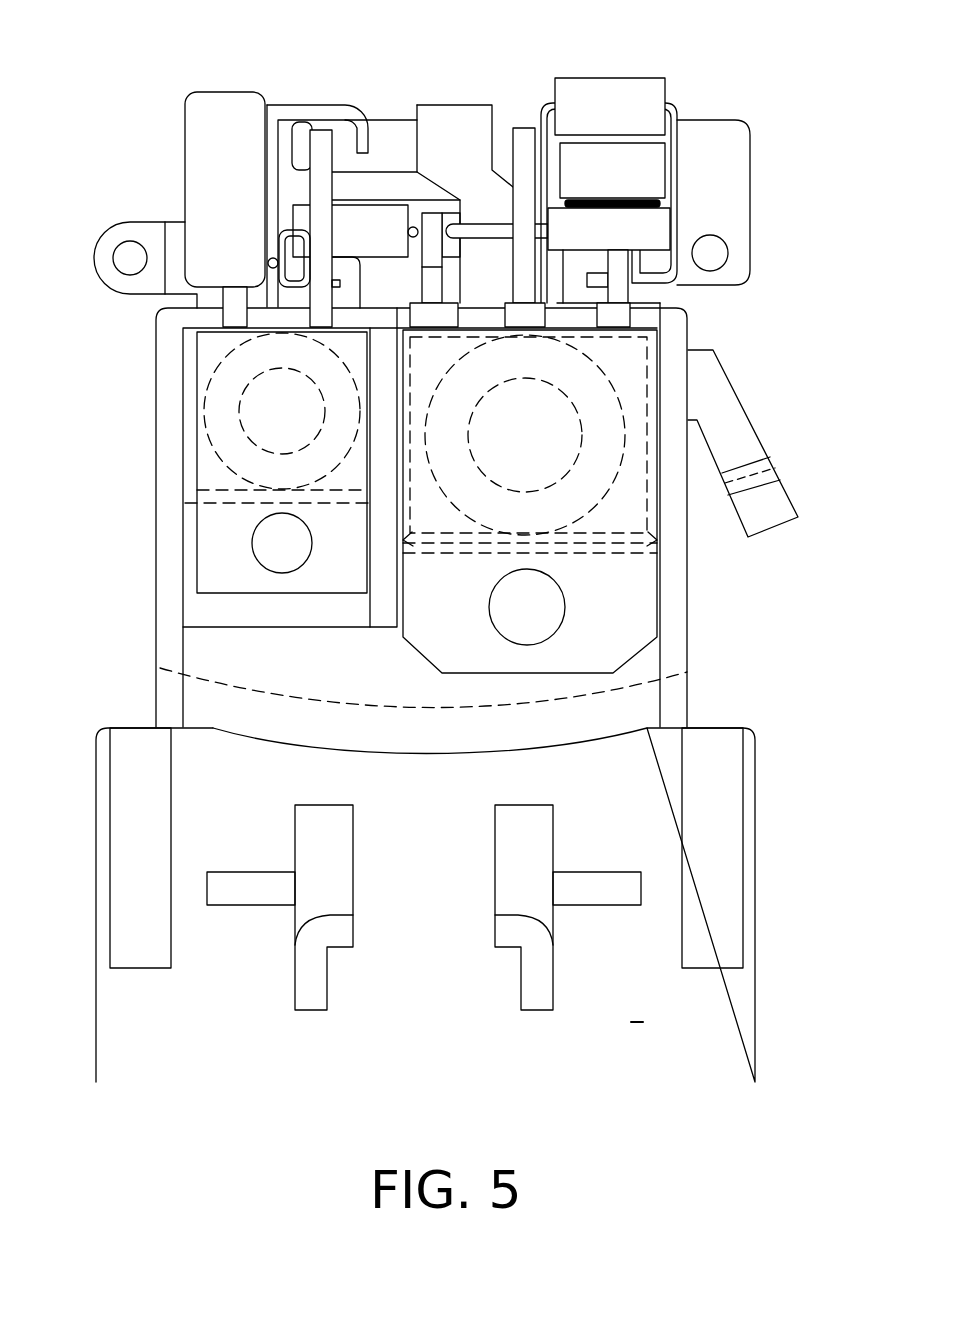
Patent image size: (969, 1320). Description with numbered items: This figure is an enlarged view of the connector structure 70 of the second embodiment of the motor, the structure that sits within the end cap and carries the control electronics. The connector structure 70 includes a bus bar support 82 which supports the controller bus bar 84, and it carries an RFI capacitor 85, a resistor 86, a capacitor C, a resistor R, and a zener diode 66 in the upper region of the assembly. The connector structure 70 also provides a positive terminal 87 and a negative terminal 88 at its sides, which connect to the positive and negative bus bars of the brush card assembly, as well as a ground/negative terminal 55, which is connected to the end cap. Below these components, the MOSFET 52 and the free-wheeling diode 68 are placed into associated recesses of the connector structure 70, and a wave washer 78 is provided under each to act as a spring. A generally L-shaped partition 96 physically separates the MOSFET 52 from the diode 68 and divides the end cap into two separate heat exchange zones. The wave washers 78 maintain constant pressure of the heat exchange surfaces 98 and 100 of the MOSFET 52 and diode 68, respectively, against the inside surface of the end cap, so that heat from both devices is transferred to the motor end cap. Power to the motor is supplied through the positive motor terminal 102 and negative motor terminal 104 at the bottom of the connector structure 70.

The MOSFET 52 is at (633, 612).
The ground/negative terminal 55 is at (772, 512).
The zener diode 66 is at (627, 165).
The free-wheeling diode 68 is at (213, 558).
The connector structure 70 is at (210, 795).
The wave washer 78 is at (218, 413).
The bus bar support 82 is at (468, 135).
The controller bus bar 84 is at (343, 137).
The RFI capacitor 85 is at (202, 140).
The resistor 86 is at (380, 223).
The positive terminal 87 is at (140, 287).
The negative terminal 88 is at (707, 270).
The partition 96 is at (222, 615).
The heat exchange surface 98 is at (630, 507).
The heat exchange surface 100 is at (208, 473).
The positive motor terminal 102 is at (300, 1012).
The negative motor terminal 104 is at (548, 1012).
The capacitor C is at (627, 93).
The resistor R is at (628, 222).